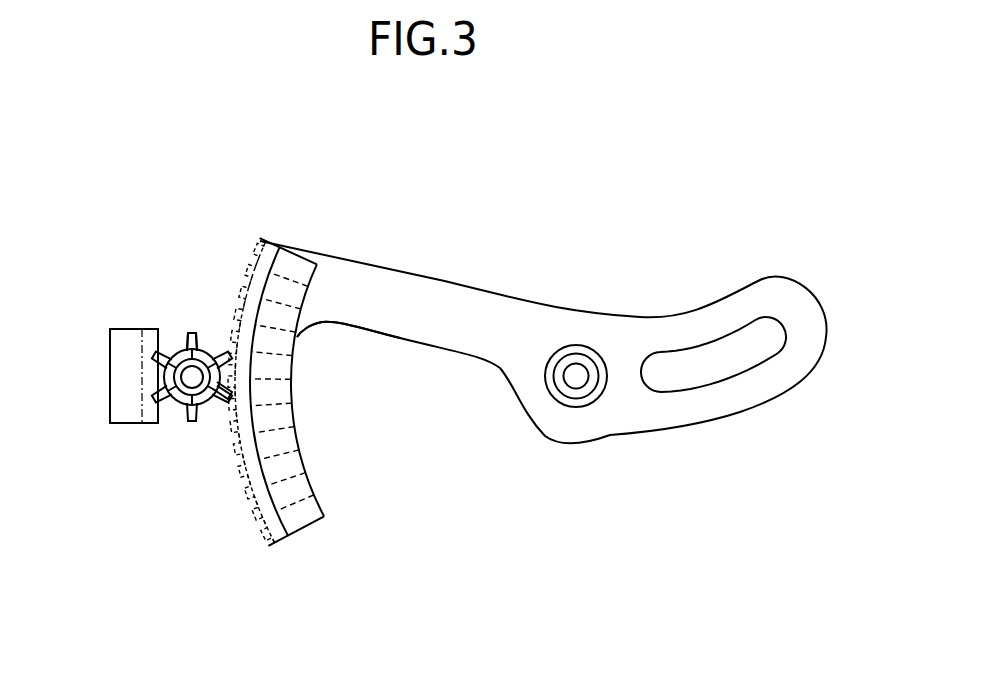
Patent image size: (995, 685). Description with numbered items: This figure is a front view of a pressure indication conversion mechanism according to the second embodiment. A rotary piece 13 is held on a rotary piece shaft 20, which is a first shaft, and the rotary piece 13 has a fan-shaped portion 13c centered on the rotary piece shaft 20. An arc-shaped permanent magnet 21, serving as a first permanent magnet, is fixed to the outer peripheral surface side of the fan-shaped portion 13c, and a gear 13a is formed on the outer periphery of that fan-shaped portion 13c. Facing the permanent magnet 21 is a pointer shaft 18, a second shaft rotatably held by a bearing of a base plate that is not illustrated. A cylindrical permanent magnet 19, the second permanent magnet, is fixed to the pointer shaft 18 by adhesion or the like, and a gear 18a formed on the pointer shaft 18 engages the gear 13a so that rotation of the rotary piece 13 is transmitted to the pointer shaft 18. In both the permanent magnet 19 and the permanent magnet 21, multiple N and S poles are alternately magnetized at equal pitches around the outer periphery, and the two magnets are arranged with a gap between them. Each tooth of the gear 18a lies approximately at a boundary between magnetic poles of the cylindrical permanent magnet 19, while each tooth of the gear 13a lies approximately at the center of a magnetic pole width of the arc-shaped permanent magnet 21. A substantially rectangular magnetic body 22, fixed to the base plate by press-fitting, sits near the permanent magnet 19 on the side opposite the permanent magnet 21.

The rotary piece 13 is at (473, 297).
The gear 13a is at (263, 535).
The fan-shaped portion 13c is at (305, 328).
The pointer shaft 18 is at (173, 402).
The gear 18a is at (200, 332).
The cylindrical permanent magnet 19 is at (200, 420).
The rotary piece shaft 20 is at (577, 380).
The arc-shaped permanent magnet 21 is at (287, 260).
The magnetic body 22 is at (123, 347).